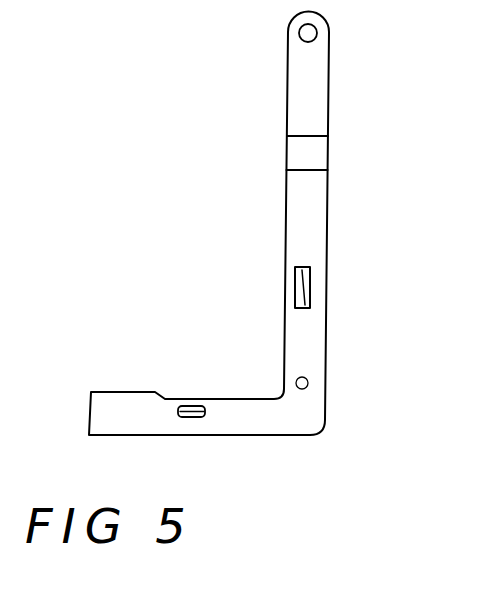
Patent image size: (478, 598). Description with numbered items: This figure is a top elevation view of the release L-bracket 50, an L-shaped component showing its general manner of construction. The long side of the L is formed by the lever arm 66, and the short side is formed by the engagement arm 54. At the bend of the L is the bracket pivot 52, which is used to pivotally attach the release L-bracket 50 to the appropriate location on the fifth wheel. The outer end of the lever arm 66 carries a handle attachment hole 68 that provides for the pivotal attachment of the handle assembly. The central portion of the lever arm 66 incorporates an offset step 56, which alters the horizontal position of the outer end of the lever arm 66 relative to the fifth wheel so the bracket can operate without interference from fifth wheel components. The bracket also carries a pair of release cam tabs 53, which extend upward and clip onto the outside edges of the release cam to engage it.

The release L-bracket 50 is at (268, 227).
The bracket pivot 52 is at (296, 376).
The release cam tabs 53 is at (312, 285).
The engagement arm 54 is at (178, 400).
The offset step 56 is at (286, 151).
The lever arm 66 is at (283, 89).
The handle attachment hole 68 is at (298, 32).